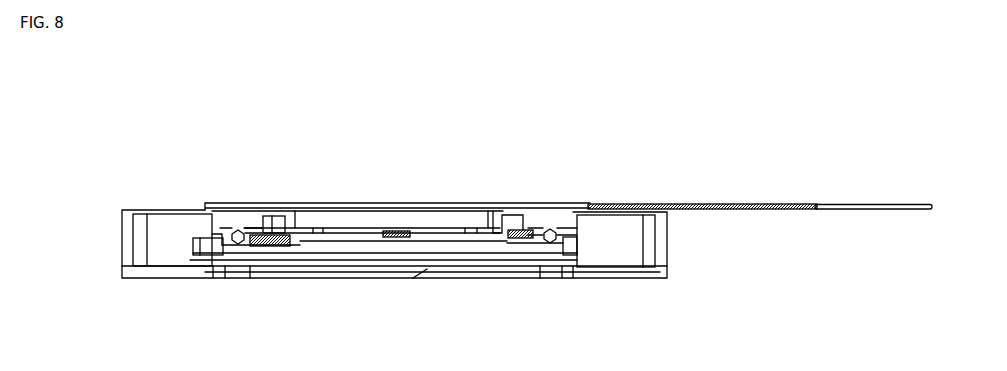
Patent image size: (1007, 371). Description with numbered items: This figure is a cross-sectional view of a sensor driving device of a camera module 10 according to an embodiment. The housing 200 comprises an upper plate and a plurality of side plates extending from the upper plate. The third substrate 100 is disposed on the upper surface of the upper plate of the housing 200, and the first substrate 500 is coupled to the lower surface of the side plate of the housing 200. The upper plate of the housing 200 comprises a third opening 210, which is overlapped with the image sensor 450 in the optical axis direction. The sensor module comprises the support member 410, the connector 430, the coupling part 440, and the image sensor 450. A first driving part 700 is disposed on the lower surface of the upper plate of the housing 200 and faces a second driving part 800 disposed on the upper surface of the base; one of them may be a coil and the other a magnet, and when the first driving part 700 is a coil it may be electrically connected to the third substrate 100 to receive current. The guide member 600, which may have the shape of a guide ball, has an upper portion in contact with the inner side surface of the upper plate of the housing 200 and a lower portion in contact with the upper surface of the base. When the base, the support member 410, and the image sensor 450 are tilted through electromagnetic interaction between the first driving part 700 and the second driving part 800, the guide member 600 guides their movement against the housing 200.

The camera module 10 is at (254, 83).
The third substrate 100 is at (581, 204).
The housing 200 is at (661, 232).
The third opening 210 is at (391, 229).
The support member 410 is at (450, 268).
The connector 430 is at (527, 278).
The coupling part 440 is at (292, 266).
The image sensor 450 is at (369, 266).
The first substrate 500 is at (637, 268).
The guide member 600 is at (550, 229).
The first driving part 700 is at (273, 213).
The second driving part 800 is at (262, 240).